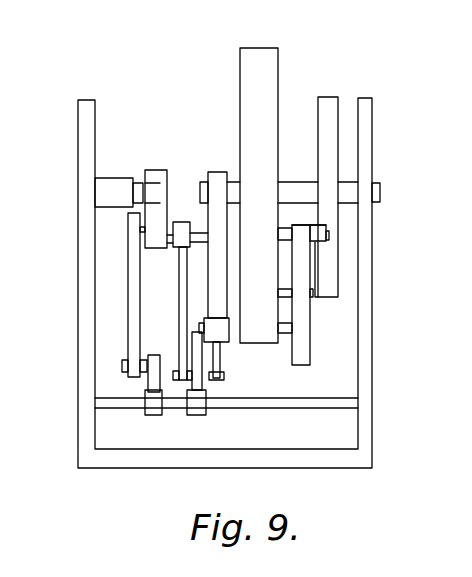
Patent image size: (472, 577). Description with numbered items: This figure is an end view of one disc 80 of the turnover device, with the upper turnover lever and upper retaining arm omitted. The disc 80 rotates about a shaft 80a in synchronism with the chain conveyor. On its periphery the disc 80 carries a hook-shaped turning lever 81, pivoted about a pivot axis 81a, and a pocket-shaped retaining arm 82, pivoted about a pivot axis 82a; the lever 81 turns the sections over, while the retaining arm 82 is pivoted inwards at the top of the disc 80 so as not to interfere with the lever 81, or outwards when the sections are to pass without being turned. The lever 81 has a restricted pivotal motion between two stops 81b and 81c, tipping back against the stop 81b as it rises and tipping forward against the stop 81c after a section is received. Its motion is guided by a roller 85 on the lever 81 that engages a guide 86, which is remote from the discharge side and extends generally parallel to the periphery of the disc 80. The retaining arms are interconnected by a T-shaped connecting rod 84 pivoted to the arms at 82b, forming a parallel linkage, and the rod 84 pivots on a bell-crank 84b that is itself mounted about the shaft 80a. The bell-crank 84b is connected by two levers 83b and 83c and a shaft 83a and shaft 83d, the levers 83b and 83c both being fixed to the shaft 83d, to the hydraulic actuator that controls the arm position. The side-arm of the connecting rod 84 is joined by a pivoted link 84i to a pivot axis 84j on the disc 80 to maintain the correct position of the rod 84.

The disc 80 is at (268, 60).
The shaft 80a is at (343, 193).
The turning lever 81 is at (307, 357).
The pivot axis of lever 81a is at (283, 291).
The stop 81b is at (290, 324).
The stop 81c is at (329, 233).
The retaining arm 82 is at (215, 257).
The pivot axis of retaining arm 82a is at (237, 193).
The pivot of connecting rod to arm 82b is at (200, 180).
The shaft 83a is at (132, 280).
The lever 83b is at (152, 379).
The lever 83c is at (204, 386).
The shaft 83d is at (245, 402).
The T-shaped connecting rod 84 is at (198, 232).
The bell-crank 84b is at (155, 212).
The pivoted link 84i is at (222, 352).
The pivot axis 84j is at (229, 325).
The roller 85 is at (330, 240).
The guide 86 is at (335, 65).